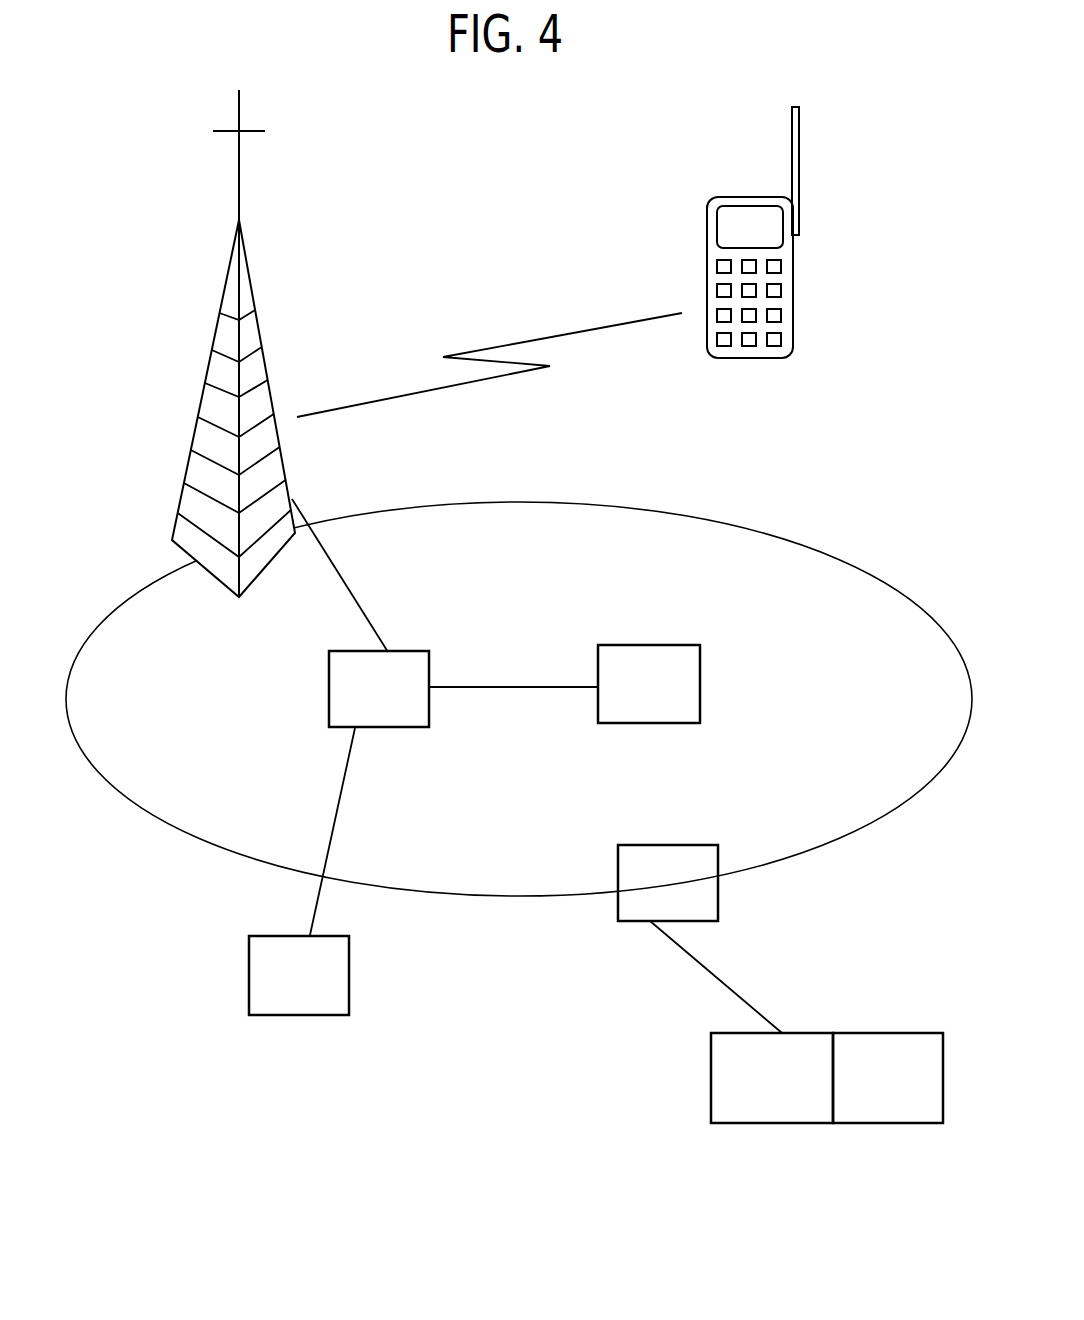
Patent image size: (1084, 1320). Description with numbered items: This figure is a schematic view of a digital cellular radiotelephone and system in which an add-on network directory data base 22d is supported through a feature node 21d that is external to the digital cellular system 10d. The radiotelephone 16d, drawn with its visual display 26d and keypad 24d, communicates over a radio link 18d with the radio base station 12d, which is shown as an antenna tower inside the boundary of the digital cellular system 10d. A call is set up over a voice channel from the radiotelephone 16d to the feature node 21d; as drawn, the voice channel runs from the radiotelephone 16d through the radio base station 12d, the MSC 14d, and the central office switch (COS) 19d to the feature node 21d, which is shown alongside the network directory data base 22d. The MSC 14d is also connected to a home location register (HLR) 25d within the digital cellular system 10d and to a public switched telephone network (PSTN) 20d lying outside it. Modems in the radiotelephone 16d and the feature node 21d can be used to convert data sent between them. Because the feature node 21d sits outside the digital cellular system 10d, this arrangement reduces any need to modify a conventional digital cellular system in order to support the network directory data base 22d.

The digital cellular system 10d is at (772, 512).
The radio base station 12d is at (208, 357).
The MSC 14d is at (423, 648).
The radiotelephone 16d is at (763, 248).
The radio link 18d is at (502, 346).
The central office switch 19d is at (700, 843).
The public switched telephone network 20d is at (248, 968).
The feature node 21d is at (711, 1102).
The network directory data base 22d is at (880, 1123).
The keypad 24d is at (773, 316).
The home location register 25d is at (663, 643).
The display 26d is at (770, 240).